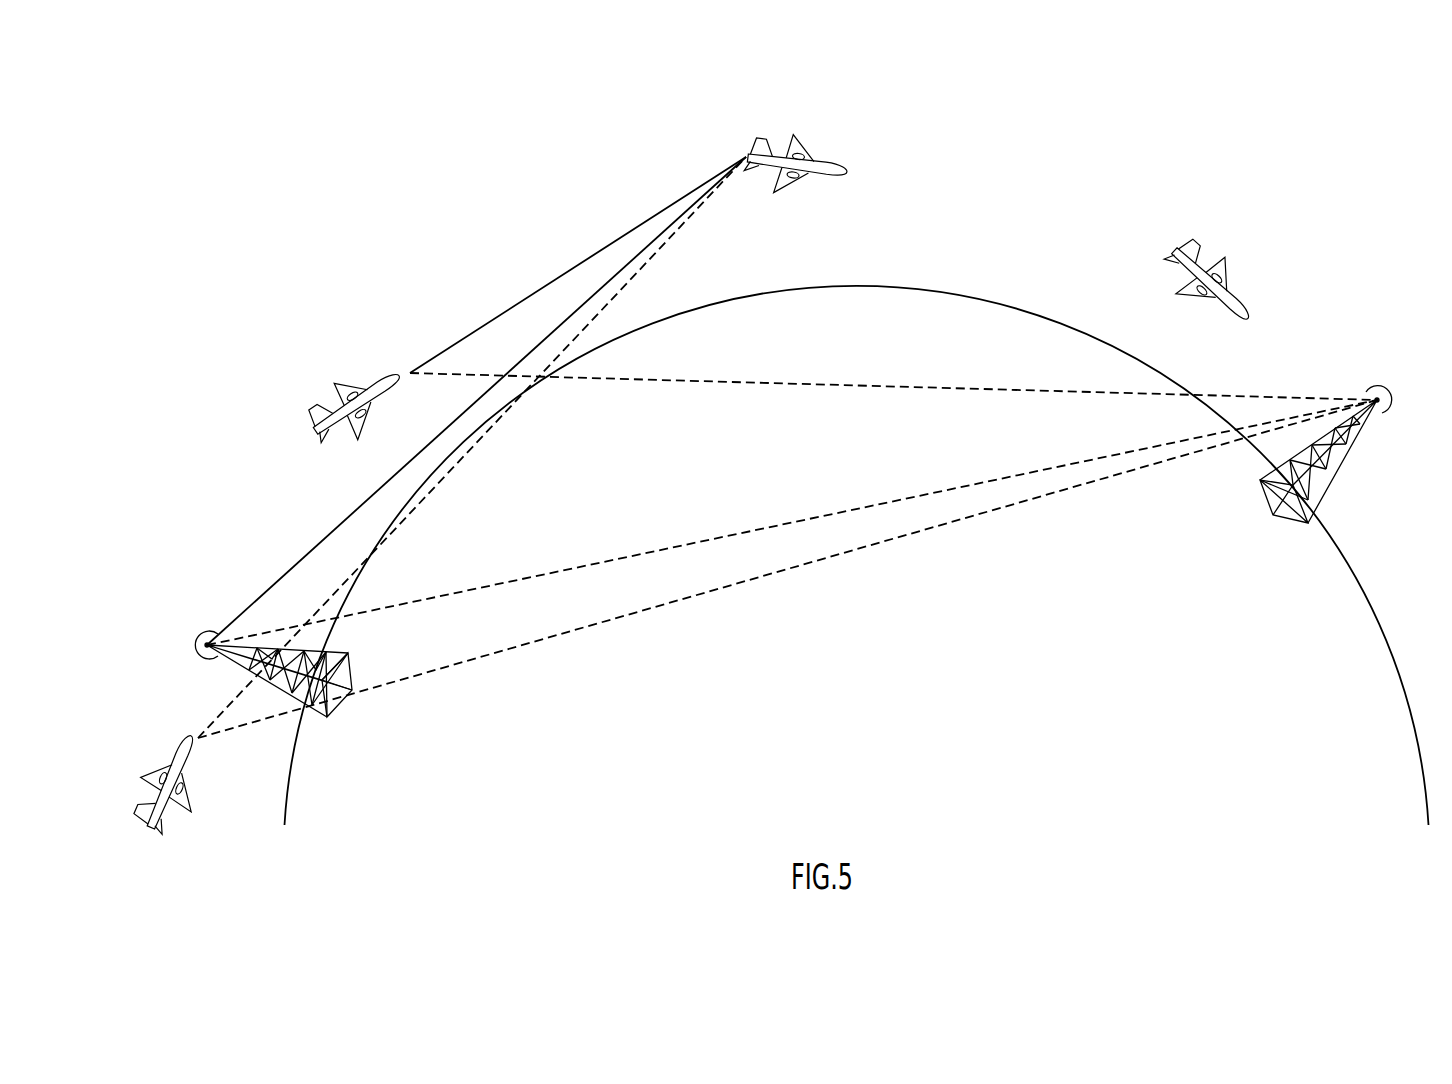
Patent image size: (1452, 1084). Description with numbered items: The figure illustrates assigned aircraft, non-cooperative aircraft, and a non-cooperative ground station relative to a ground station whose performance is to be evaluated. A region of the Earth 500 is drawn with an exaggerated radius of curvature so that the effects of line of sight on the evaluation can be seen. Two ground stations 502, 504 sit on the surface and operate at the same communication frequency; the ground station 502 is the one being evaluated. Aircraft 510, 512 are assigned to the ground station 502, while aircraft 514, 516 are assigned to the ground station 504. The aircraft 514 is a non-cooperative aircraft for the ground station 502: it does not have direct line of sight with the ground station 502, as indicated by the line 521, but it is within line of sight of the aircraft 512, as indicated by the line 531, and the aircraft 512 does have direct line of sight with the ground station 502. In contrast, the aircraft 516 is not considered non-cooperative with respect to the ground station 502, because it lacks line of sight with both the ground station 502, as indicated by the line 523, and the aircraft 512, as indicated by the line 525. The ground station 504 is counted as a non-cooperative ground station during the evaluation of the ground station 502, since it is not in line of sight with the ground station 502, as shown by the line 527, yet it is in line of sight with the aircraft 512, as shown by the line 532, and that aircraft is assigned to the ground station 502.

The Earth 500 is at (940, 290).
The ground station 502 is at (1292, 525).
The ground station 504 is at (352, 660).
The aircraft 510 is at (1240, 300).
The aircraft 512 is at (825, 160).
The aircraft 514 is at (380, 378).
The aircraft 516 is at (175, 748).
The line 521 is at (650, 380).
The line 523 is at (605, 622).
The line 525 is at (467, 453).
The line 527 is at (765, 528).
The line 531 is at (535, 292).
The line 532 is at (315, 547).